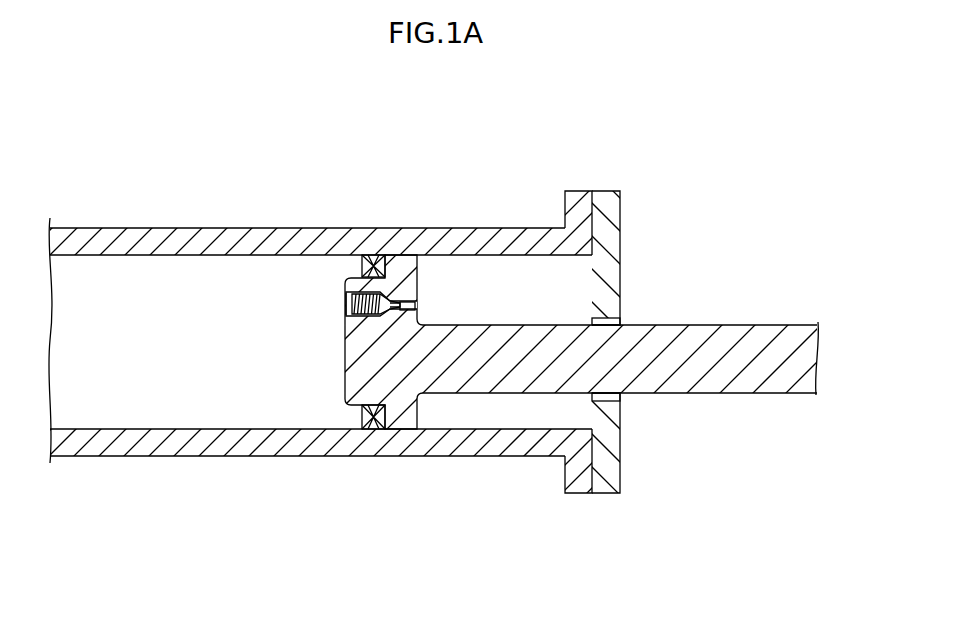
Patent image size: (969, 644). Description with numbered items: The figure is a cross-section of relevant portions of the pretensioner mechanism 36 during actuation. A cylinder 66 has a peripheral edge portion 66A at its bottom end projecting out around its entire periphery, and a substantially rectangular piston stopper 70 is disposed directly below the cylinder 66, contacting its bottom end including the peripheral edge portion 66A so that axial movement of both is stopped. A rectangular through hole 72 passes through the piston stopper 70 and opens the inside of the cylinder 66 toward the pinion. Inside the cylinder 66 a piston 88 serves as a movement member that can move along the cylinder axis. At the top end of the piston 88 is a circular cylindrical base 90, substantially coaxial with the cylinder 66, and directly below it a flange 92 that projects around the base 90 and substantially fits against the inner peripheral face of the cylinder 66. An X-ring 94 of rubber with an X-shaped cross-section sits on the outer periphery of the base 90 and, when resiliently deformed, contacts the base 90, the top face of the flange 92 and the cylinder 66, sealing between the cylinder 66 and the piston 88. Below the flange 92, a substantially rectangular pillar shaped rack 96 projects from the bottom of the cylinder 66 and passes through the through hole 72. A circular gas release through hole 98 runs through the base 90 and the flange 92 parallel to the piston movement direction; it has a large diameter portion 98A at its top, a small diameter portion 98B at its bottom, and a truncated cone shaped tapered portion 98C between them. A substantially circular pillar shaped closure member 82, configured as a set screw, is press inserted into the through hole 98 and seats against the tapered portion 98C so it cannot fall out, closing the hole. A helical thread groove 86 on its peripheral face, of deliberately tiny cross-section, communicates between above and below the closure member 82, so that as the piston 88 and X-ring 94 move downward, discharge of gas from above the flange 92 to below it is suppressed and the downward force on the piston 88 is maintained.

The pretensioner mechanism 36 is at (206, 170).
The cylinder 66 is at (266, 228).
The peripheral edge portion 66A is at (580, 190).
The piston stopper 70 is at (607, 190).
The through hole 72 is at (610, 324).
The closure member 82 is at (352, 304).
The thread groove 86 is at (350, 316).
The piston 88 is at (721, 320).
The base 90 is at (345, 362).
The flange 92 is at (385, 228).
The X-ring 94 is at (363, 419).
The rack 96 is at (778, 323).
The through hole 98 is at (416, 302).
The large diameter portion 98A is at (350, 293).
The small diameter portion 98B is at (404, 307).
The tapered portion 98C is at (392, 300).